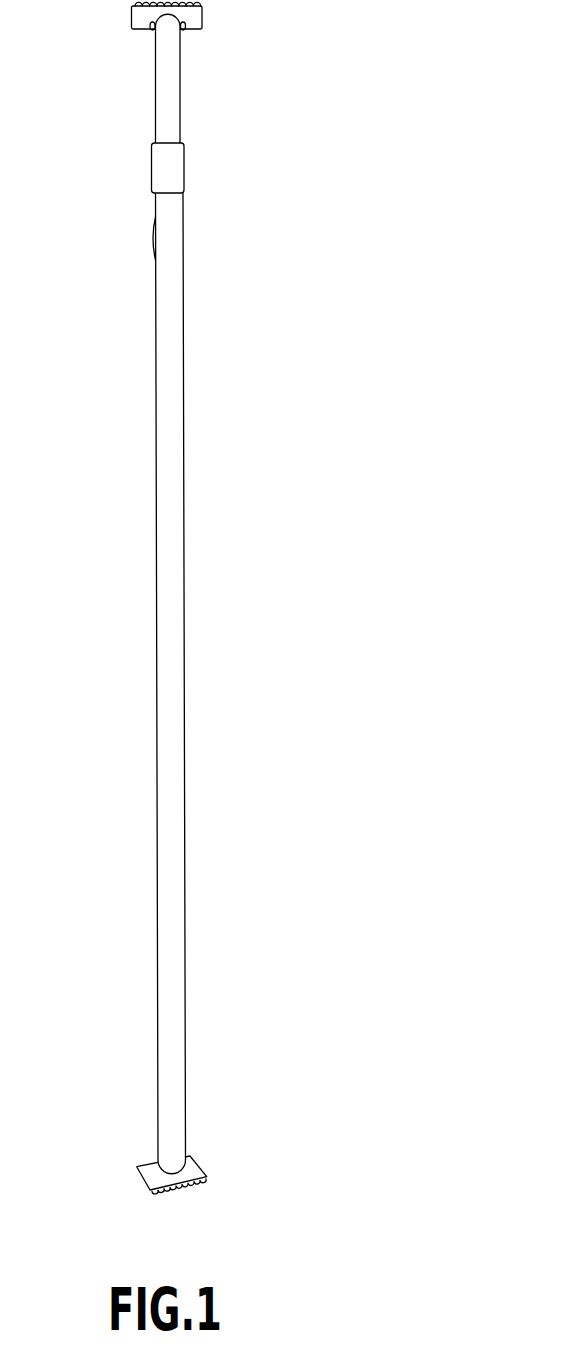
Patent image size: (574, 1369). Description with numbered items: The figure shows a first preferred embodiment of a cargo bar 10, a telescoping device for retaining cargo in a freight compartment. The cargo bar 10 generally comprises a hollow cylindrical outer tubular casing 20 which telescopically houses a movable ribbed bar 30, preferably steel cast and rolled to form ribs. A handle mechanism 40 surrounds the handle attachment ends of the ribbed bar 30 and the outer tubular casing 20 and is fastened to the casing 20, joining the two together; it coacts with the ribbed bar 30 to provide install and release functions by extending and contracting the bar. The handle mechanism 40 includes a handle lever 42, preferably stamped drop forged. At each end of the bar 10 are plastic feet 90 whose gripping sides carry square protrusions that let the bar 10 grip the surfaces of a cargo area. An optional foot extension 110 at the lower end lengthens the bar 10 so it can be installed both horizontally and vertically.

The cargo bar 10 is at (306, 595).
The outer tubular casing 20 is at (184, 312).
The movable ribbed bar 30 is at (181, 87).
The handle mechanism 40 is at (184, 167).
The handle lever 42 is at (150, 235).
The feet 90 is at (191, 20).
The foot extension 110 is at (157, 1163).